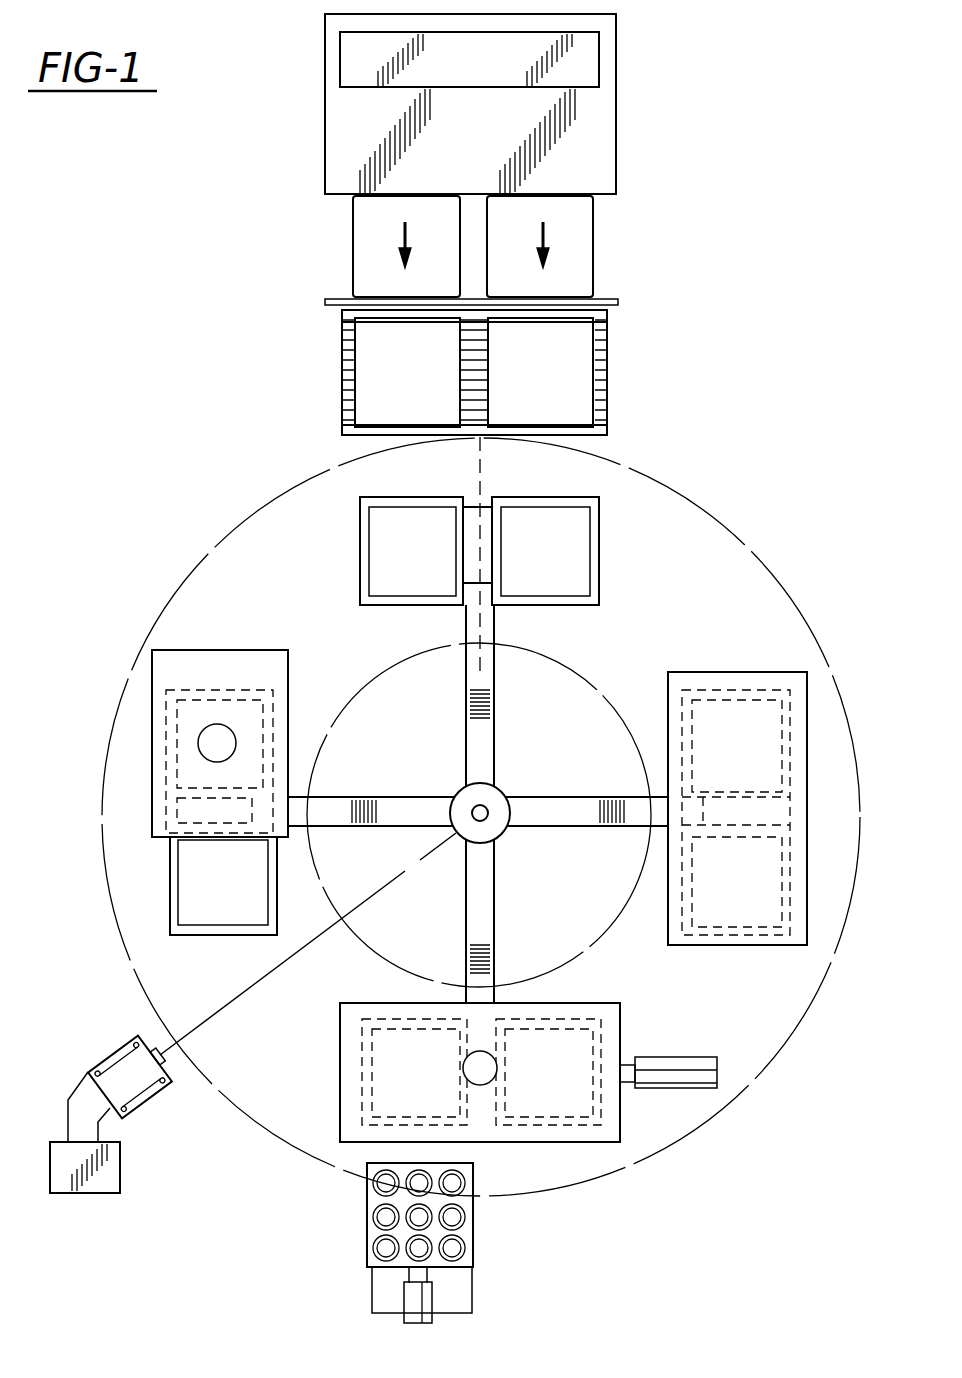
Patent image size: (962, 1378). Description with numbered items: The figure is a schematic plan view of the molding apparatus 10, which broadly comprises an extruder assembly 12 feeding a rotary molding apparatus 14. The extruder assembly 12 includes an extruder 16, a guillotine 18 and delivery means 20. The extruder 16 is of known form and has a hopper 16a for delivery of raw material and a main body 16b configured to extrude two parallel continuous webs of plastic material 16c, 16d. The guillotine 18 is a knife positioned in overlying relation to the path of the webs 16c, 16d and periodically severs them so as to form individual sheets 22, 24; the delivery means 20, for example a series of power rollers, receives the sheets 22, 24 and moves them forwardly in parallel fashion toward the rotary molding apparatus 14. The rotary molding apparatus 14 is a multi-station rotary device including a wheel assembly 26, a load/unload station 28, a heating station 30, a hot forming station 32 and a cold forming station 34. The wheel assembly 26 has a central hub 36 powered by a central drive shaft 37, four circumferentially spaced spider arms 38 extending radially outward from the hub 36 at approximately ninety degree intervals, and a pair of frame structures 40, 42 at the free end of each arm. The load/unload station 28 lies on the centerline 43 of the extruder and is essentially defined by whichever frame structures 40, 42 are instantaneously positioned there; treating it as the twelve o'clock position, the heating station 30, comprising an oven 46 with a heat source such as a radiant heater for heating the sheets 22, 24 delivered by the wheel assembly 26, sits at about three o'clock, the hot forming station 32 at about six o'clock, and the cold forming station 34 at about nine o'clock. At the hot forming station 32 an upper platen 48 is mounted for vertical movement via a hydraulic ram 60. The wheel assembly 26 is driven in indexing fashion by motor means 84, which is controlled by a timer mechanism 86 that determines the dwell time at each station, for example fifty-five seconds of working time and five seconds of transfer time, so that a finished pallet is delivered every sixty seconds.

The molding apparatus 10 is at (758, 295).
The extruder assembly 12 is at (265, 207).
The rotary molding apparatus 14 is at (218, 438).
The extruder 16 is at (326, 152).
The hopper 16a is at (588, 70).
The main body 16b is at (617, 166).
The continuous web of plastic material 16c is at (353, 246).
The continuous web of plastic material 16d is at (583, 270).
The guillotine 18 is at (619, 302).
The delivery means 20 is at (620, 410).
The sheet 22 is at (426, 380).
The sheet 24 is at (558, 380).
The wheel assembly 26 is at (458, 780).
The load/unload station 28 is at (345, 570).
The heating station 30 is at (762, 666).
The hot forming station 32 is at (568, 1000).
The cold forming station 34 is at (168, 895).
The central hub 36 is at (505, 797).
The central drive shaft 37 is at (483, 818).
The spider arms 38 is at (575, 797).
The frame structure 40 is at (400, 612).
The frame structure 42 is at (620, 560).
The centerline 43 is at (478, 450).
The oven 46 is at (807, 905).
The upper platen 48 is at (340, 1088).
The hydraulic ram 60 is at (478, 1086).
The motor means 84 is at (123, 1063).
The timer mechanism 86 is at (115, 1172).